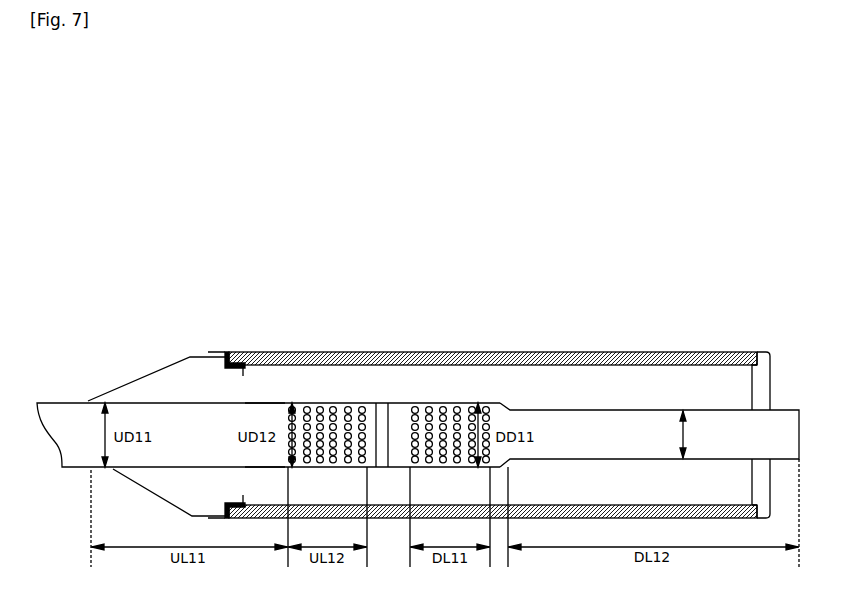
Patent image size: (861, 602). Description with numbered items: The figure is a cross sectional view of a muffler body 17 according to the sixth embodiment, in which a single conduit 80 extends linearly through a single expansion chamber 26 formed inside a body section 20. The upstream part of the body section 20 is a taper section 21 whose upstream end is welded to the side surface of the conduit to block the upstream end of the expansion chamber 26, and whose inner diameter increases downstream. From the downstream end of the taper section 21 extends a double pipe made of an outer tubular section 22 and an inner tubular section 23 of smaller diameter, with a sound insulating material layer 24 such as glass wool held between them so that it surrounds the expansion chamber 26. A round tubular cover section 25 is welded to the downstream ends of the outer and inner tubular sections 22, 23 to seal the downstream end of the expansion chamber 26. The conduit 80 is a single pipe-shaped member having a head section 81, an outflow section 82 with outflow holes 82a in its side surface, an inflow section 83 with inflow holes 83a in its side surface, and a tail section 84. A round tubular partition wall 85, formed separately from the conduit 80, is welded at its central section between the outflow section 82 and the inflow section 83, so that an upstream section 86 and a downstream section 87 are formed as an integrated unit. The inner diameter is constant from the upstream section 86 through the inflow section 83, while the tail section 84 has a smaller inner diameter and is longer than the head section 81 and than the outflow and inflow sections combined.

The muffler body 17 is at (337, 163).
The body section 20 is at (57, 225).
The taper section 21 is at (147, 373).
The outer tubular section 22 is at (248, 343).
The inner tubular section 23 is at (261, 352).
The sound insulating material layer 24 is at (277, 352).
The cover section 25 is at (770, 382).
The expansion chamber 26 is at (668, 392).
The conduit 80 is at (517, 223).
The head section 81 is at (253, 393).
The outflow section 82 is at (348, 403).
The outflow holes 82a is at (333, 403).
The inflow section 83 is at (427, 403).
The inflow holes 83a is at (458, 403).
The tail section 84 is at (583, 410).
The partition wall 85 is at (388, 437).
The upstream section 86 is at (397, 260).
The downstream section 87 is at (443, 258).